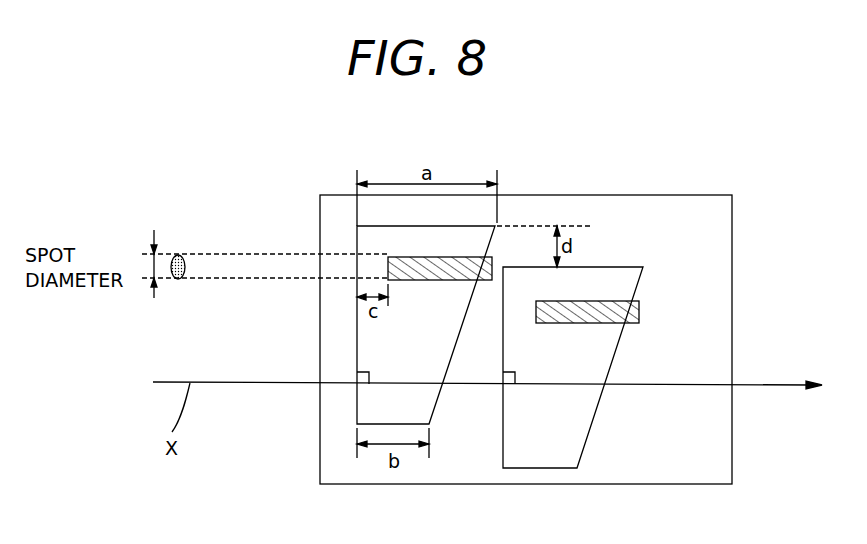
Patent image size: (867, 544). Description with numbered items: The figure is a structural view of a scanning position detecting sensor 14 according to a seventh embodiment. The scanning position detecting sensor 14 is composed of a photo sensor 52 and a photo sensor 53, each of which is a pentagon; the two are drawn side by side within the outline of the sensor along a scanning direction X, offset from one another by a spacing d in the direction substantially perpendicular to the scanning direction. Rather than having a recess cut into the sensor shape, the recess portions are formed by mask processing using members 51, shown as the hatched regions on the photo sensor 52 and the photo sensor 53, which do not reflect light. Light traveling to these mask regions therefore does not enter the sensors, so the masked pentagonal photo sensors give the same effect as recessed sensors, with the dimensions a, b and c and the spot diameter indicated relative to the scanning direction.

The scanning position detecting sensor 14 is at (512, 195).
The members 51 is at (497, 254).
The photo sensor 52 is at (357, 403).
The photo sensor 53 is at (503, 443).